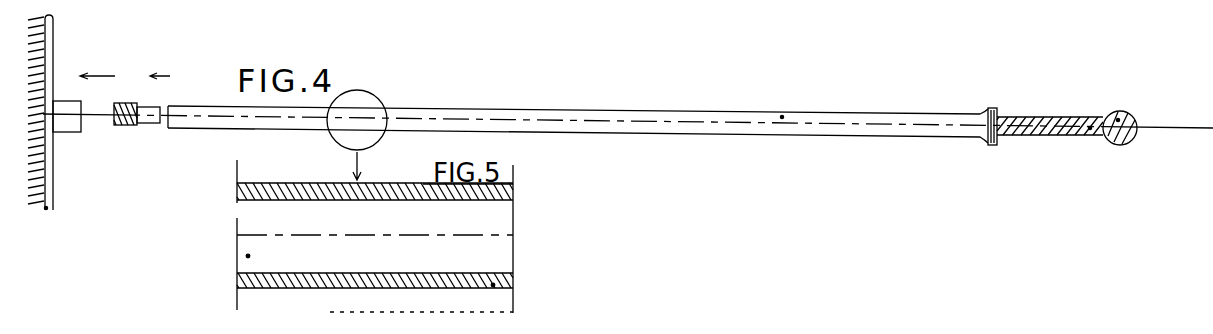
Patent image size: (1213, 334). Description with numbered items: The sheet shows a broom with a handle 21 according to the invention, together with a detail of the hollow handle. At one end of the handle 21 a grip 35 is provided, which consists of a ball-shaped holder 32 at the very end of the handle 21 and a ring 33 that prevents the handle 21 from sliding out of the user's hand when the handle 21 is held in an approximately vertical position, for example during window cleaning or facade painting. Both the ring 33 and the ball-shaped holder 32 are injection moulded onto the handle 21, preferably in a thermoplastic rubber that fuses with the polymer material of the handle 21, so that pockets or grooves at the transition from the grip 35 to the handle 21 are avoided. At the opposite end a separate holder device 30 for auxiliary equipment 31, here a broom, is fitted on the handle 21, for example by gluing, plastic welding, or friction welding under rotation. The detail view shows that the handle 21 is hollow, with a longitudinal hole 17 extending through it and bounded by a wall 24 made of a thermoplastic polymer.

In FIG. 5, the longitudinal hole 17 is at (248, 256).
In FIG. 4, the handle 21 is at (842, 86).
In FIG. 5, the wall 24 is at (493, 285).
In FIG. 4, the holder device 30 is at (120, 120).
In FIG. 4, the auxiliary equipment 31 is at (46, 208).
In FIG. 4, the ball-shaped holder 32 is at (1118, 120).
In FIG. 4, the ring 33 is at (993, 123).
In FIG. 4, the grip 35 is at (1090, 128).